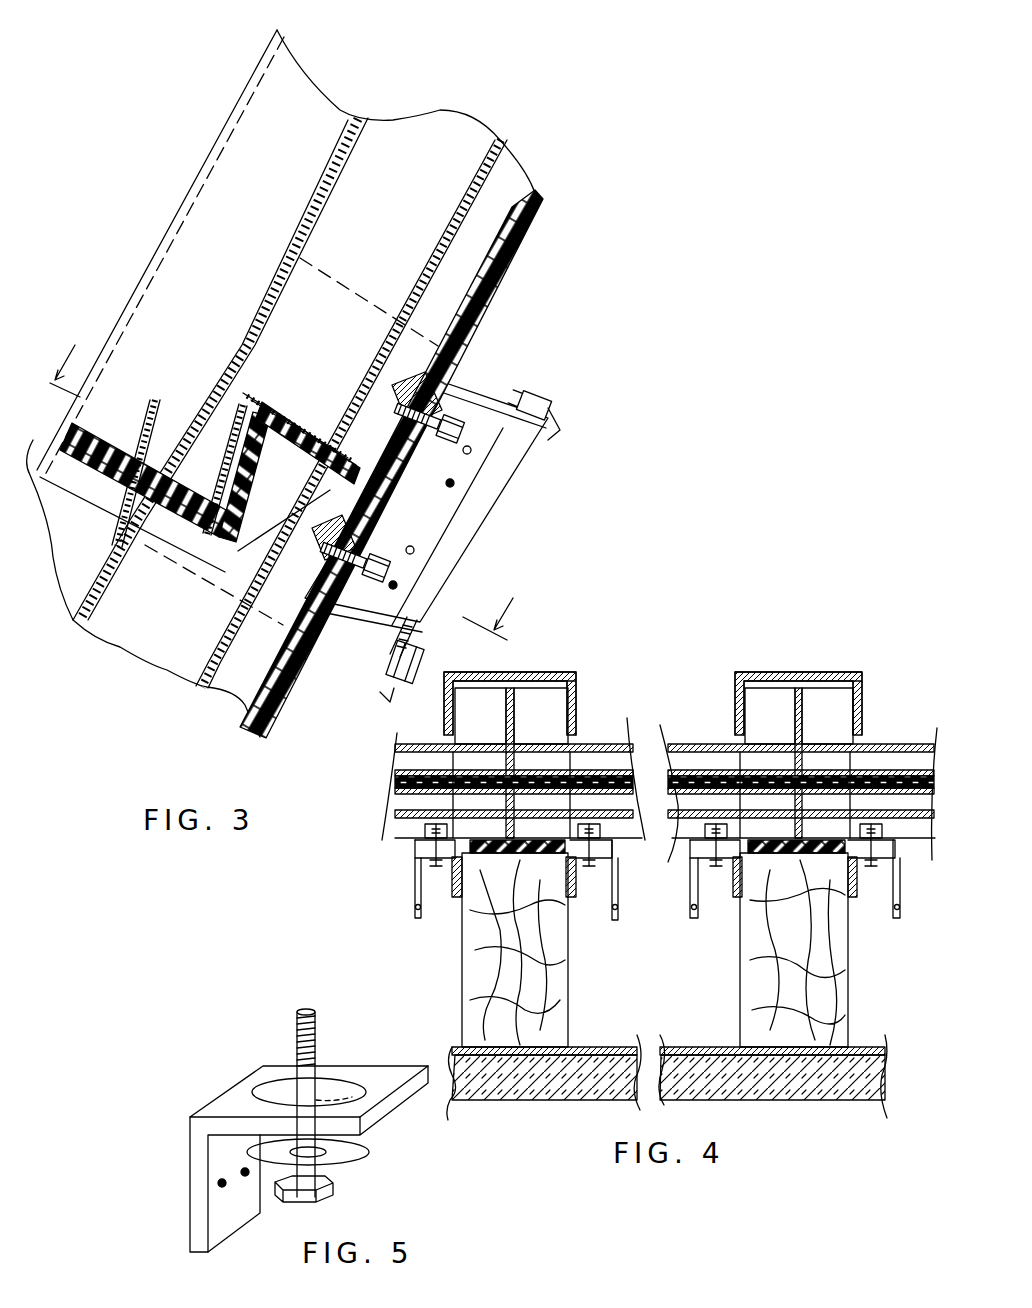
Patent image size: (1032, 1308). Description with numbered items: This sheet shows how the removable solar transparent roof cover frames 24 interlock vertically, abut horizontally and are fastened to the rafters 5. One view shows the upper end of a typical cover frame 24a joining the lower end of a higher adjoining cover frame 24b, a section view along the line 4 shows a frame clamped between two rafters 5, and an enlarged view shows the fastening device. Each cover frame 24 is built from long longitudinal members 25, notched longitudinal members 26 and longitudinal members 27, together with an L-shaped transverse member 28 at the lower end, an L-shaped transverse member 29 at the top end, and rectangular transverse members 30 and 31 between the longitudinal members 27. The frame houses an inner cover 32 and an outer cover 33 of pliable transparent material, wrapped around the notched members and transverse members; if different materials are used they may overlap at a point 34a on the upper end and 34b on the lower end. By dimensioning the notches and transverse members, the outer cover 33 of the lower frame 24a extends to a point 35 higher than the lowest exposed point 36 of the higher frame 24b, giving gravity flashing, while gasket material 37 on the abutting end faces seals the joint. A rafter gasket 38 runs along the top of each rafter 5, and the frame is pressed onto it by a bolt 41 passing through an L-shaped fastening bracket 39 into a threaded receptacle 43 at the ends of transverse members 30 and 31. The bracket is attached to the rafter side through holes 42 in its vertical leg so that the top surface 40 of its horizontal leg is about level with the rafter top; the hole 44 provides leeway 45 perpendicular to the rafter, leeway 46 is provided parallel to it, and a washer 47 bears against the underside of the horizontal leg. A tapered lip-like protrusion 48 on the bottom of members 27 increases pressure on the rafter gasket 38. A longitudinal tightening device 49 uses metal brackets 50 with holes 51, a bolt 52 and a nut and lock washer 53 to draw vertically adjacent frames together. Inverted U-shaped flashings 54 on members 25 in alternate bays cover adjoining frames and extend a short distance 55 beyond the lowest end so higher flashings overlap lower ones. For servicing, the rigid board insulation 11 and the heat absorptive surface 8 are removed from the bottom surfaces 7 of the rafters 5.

In FIG. 3, the rafter 5 is at (602, 277).
In FIG. 4, the rafter 5 is at (462, 995).
In FIG. 4, the bottom surface of rafter 7 is at (500, 1045).
In FIG. 4, the heat absorptive surface 8 is at (580, 1047).
In FIG. 4, the rigid board-type insulation 11 is at (810, 1095).
In FIG. 4, the solar transparent roof cover frame 24 is at (594, 742).
In FIG. 3, the cover frame 24a is at (188, 643).
In FIG. 3, the higher adjoining cover frame 24b is at (436, 201).
In FIG. 3, the rectangular longitudinal member 25 is at (353, 118).
In FIG. 4, the rectangular longitudinal member 25 is at (654, 763).
In FIG. 3, the notched longitudinal member 26 is at (421, 118).
In FIG. 4, the notched longitudinal member 26 is at (664, 781).
In FIG. 3, the rectangular longitudinal member 27 is at (508, 160).
In FIG. 4, the rectangular longitudinal member 27 is at (627, 826).
In FIG. 3, the L-shaped transverse member 28 is at (326, 278).
In FIG. 4, the L-shaped transverse member 28 is at (688, 793).
In FIG. 3, the L-shaped transverse member 29 is at (180, 566).
In FIG. 4, the L-shaped transverse member 29 is at (714, 798).
In FIG. 3, the rectangular transverse member 30 is at (278, 618).
In FIG. 4, the rectangular transverse member 30 is at (692, 826).
In FIG. 3, the rectangular transverse member 31 is at (414, 340).
In FIG. 3, the inner cover 32 is at (474, 190).
In FIG. 4, the inner cover 32 is at (618, 806).
In FIG. 3, the outer cover 33 is at (258, 321).
In FIG. 4, the outer cover 33 is at (720, 744).
In FIG. 3, the material termination point on upper end 34a is at (306, 470).
In FIG. 3, the material termination point on lower end 34b is at (285, 426).
In FIG. 3, the extension point of outer cover 35 is at (245, 444).
In FIG. 3, the lowest exposed point of outer cover 36 is at (176, 476).
In FIG. 3, the gasket material 37 is at (84, 438).
In FIG. 4, the gasket material 37 is at (618, 782).
In FIG. 3, the rafter gasket 38 is at (517, 283).
In FIG. 4, the rafter gasket 38 is at (500, 852).
In FIG. 3, the L-shaped fastening bracket 39 is at (500, 470).
In FIG. 4, the L-shaped fastening bracket 39 is at (616, 895).
In FIG. 5, the L-shaped fastening bracket 39 is at (188, 1116).
In FIG. 3, the top surface of horizontal leg 40 is at (374, 540).
In FIG. 4, the top surface of horizontal leg 40 is at (436, 860).
In FIG. 5, the top surface of horizontal leg 40 is at (405, 1070).
In FIG. 3, the bolt 41 is at (455, 441).
In FIG. 4, the bolt 41 is at (712, 858).
In FIG. 5, the bolt 41 is at (310, 1010).
In FIG. 3, the holes 42 is at (452, 487).
In FIG. 5, the holes 42 is at (250, 1180).
In FIG. 3, the threaded receptacle 43 is at (404, 382).
In FIG. 4, the threaded receptacle 43 is at (600, 830).
In FIG. 3, the hole in horizontal leg 44 is at (448, 485).
In FIG. 5, the hole in horizontal leg 44 is at (286, 1080).
In FIG. 5, the leeway perpendicular to rafter 45 is at (332, 1095).
In FIG. 3, the leeway parallel to rafters 46 is at (456, 414).
In FIG. 5, the washer 47 is at (370, 1152).
In FIG. 4, the tapered lip-like protrusion 48 is at (812, 852).
In FIG. 3, the longitudinal tightening device 49 is at (550, 436).
In FIG. 3, the metal bracket 50 is at (520, 408).
In FIG. 4, the metal bracket 50 is at (414, 880).
In FIG. 3, the hole 51 is at (540, 430).
In FIG. 3, the bolt 52 is at (460, 553).
In FIG. 4, the bolt 52 is at (692, 910).
In FIG. 3, the nut and lock washer 53 is at (398, 690).
In FIG. 3, the inverted U-shaped flashing 54 is at (182, 213).
In FIG. 4, the inverted U-shaped flashing 54 is at (545, 672).
In FIG. 3, the short distance beyond lowest end 55 is at (62, 447).
In FIG. 3, the section line 4 is at (289, 488).